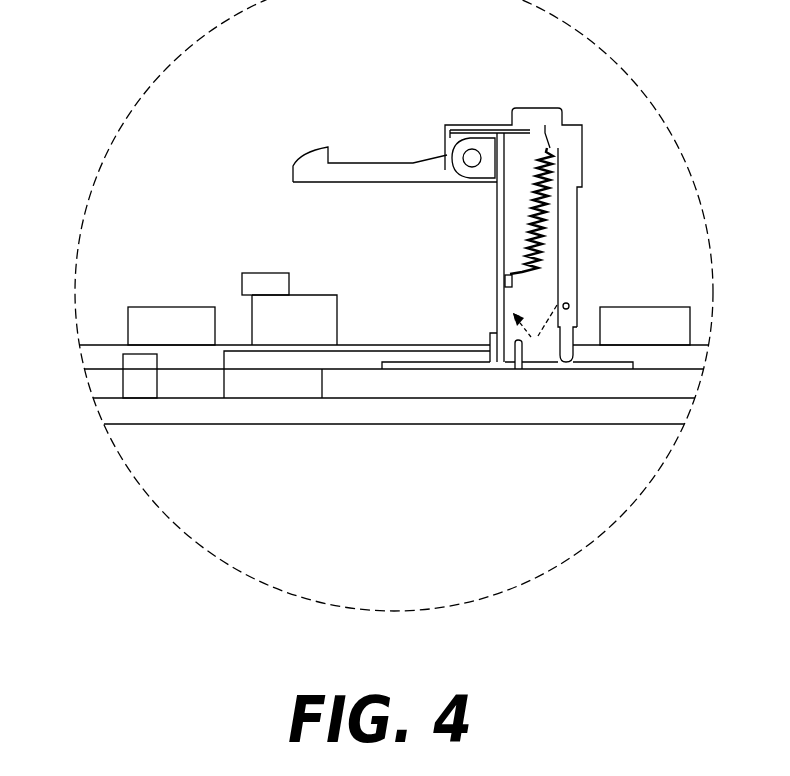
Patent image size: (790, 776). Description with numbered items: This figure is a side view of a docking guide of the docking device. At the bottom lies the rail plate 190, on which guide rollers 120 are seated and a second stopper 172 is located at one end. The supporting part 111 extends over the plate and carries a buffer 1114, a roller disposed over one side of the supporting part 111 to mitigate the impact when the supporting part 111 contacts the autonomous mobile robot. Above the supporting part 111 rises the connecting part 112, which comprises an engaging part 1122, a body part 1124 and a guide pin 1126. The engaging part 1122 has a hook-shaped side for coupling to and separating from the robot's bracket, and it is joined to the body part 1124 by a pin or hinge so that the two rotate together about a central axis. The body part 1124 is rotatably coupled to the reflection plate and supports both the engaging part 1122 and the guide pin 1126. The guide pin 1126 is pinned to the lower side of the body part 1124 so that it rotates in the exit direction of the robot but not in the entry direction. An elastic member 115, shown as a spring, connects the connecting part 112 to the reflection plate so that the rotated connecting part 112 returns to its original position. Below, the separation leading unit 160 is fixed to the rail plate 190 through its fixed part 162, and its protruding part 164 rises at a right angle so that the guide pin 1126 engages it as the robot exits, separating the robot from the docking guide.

The connecting part 112 is at (455, 250).
The engaging part 1122 is at (397, 167).
The body part 1124 is at (477, 127).
The guide pin 1126 is at (560, 370).
The elastic member 115 is at (510, 247).
The supporting part 111 is at (417, 347).
The buffer 1114 is at (258, 278).
The guide roller 120 is at (160, 313).
The second stopper 172 is at (130, 377).
The rail plate 190 is at (310, 425).
The separation leading unit 160 is at (507, 430).
The fixed part 162 is at (435, 365).
The protruding part 164 is at (508, 363).